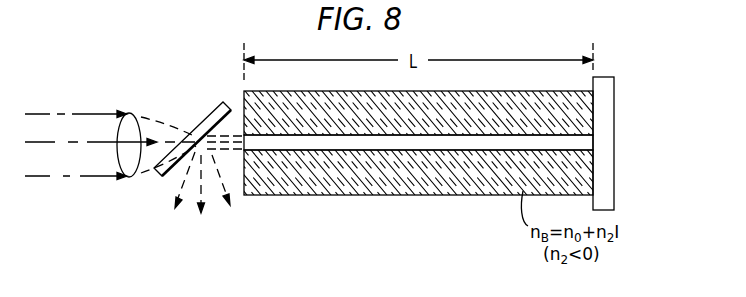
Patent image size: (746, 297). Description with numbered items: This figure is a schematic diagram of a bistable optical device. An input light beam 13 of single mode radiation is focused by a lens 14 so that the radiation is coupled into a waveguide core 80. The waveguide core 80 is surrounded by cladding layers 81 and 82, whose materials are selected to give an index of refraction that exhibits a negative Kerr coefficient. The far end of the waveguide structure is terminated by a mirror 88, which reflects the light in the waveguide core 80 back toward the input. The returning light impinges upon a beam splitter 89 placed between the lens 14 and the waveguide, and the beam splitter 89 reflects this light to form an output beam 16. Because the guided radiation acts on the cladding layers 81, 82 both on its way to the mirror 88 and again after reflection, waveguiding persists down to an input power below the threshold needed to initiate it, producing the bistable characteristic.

The input light beam 13 is at (37, 161).
The lens 14 is at (134, 120).
The output beam 16 is at (220, 187).
The waveguide core 80 is at (393, 143).
The cladding layer 81 is at (500, 110).
The cladding layer 82 is at (457, 172).
The mirror 88 is at (605, 107).
The beam splitter 89 is at (210, 112).